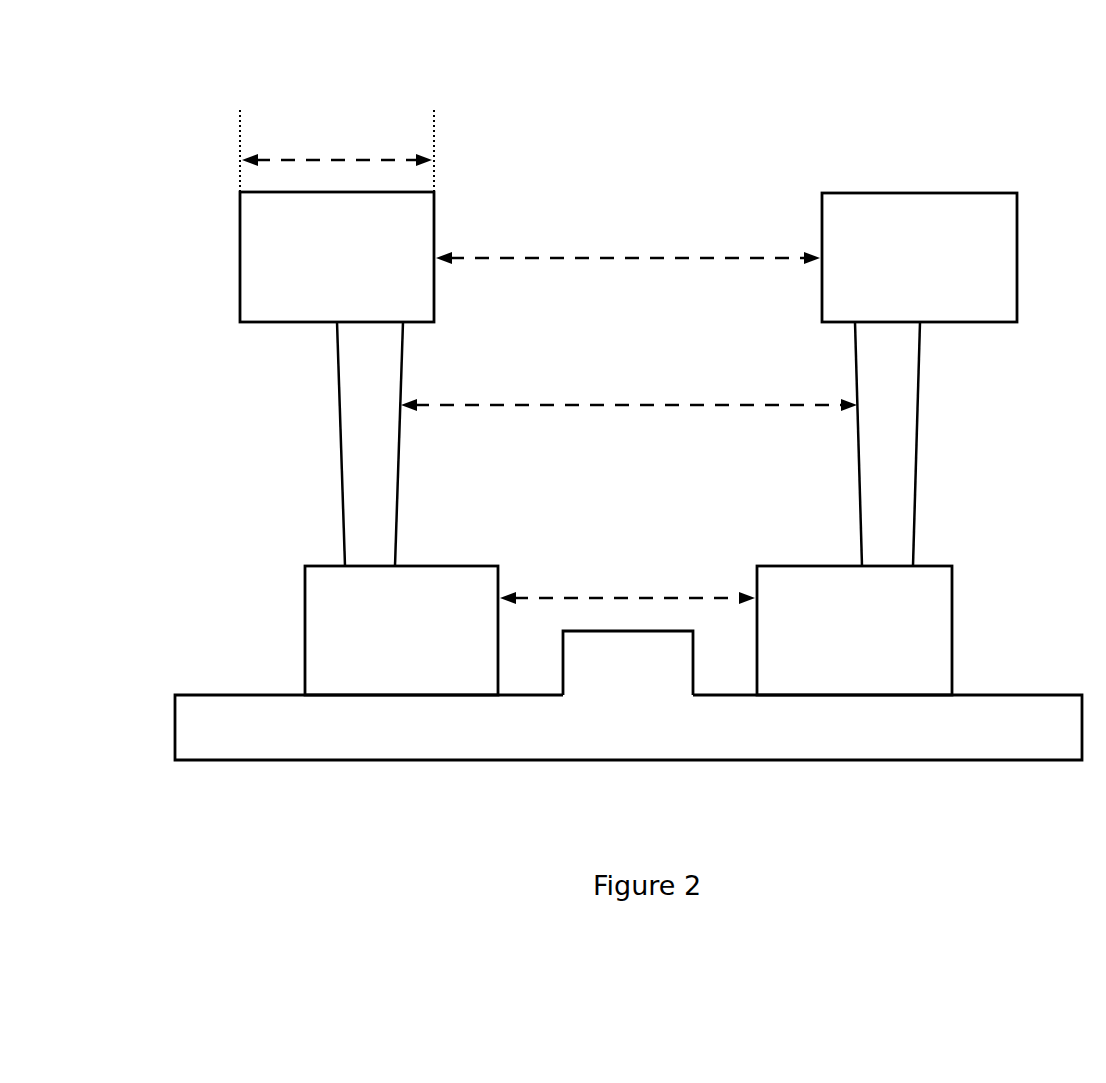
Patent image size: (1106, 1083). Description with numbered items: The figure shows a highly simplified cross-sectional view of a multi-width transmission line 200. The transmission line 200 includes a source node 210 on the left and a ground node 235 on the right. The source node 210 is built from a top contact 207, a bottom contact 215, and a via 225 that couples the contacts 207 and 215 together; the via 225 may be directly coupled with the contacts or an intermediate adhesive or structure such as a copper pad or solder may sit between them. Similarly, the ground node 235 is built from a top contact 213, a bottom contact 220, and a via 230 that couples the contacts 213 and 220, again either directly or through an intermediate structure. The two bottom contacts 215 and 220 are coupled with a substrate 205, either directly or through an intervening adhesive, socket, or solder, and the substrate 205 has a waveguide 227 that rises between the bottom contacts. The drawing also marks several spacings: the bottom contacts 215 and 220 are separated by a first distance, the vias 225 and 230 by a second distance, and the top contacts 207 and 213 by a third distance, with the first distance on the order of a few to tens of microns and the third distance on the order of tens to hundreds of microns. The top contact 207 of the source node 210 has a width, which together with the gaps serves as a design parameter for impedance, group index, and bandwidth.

The transmission line 200 is at (666, 149).
The substrate 205 is at (628, 727).
The top contact 207 is at (337, 257).
The source node 210 is at (188, 171).
The top contact 213 is at (919, 257).
The bottom contact 215 is at (401, 630).
The bottom contact 220 is at (854, 630).
The via 225 is at (370, 444).
The waveguide 227 is at (627, 658).
The via 230 is at (887, 444).
The ground node 235 is at (987, 143).